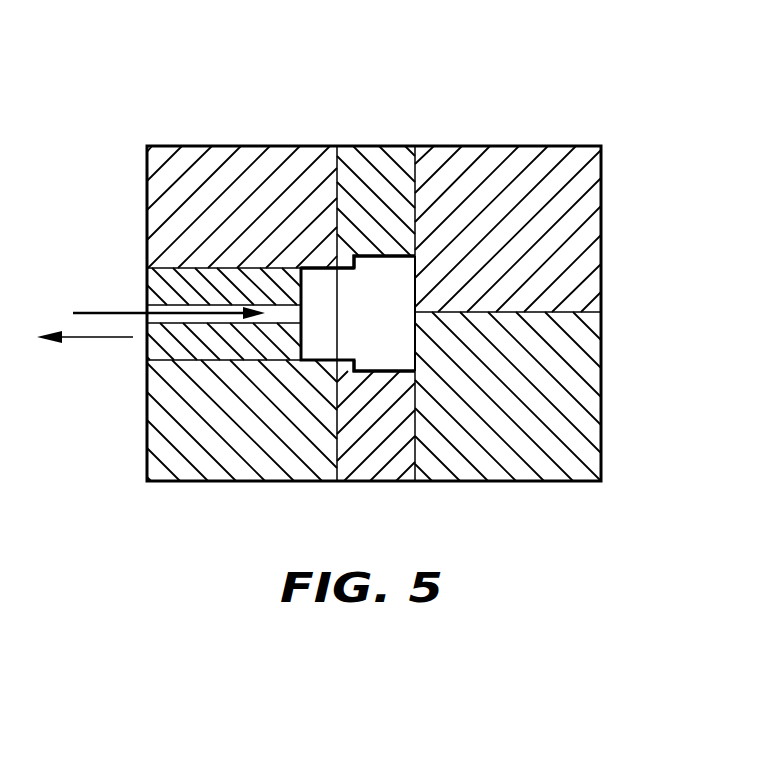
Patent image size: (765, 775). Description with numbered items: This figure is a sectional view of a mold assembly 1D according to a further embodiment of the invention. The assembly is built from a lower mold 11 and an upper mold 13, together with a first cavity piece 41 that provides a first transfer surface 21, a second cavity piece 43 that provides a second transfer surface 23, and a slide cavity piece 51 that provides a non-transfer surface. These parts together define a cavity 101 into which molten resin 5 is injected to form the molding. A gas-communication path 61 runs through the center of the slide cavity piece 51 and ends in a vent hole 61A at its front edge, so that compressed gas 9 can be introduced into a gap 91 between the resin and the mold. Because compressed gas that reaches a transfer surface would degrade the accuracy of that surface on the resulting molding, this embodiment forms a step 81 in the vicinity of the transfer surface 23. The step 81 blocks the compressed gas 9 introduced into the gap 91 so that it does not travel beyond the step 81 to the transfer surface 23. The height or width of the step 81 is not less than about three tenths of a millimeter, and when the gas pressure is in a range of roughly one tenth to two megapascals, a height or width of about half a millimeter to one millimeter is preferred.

The mold assembly 1D is at (183, 76).
The lower mold 11 is at (587, 378).
The upper mold 13 is at (583, 218).
The first transfer surface 21 is at (380, 372).
The second transfer surface 23 is at (418, 253).
The first cavity piece 41 is at (377, 458).
The second cavity piece 43 is at (380, 165).
The molten resin 5 is at (392, 333).
The slide cavity piece 51 is at (210, 352).
The gas-communication path 61 is at (162, 303).
The vent hole 61A is at (300, 315).
The step 81 is at (345, 359).
The compressed gas 9 is at (88, 312).
The gap 91 is at (317, 283).
The cavity 101 is at (355, 253).